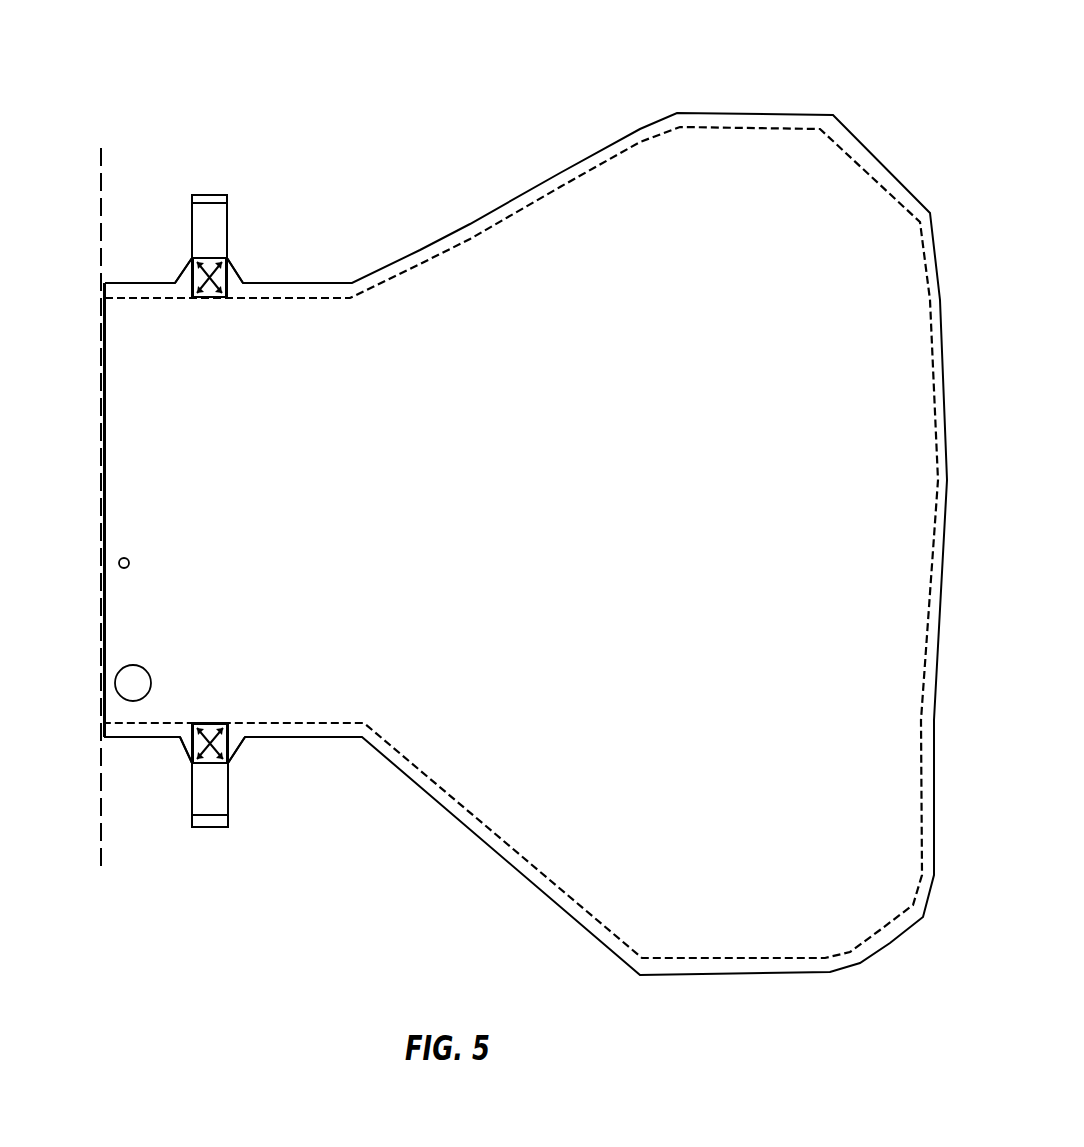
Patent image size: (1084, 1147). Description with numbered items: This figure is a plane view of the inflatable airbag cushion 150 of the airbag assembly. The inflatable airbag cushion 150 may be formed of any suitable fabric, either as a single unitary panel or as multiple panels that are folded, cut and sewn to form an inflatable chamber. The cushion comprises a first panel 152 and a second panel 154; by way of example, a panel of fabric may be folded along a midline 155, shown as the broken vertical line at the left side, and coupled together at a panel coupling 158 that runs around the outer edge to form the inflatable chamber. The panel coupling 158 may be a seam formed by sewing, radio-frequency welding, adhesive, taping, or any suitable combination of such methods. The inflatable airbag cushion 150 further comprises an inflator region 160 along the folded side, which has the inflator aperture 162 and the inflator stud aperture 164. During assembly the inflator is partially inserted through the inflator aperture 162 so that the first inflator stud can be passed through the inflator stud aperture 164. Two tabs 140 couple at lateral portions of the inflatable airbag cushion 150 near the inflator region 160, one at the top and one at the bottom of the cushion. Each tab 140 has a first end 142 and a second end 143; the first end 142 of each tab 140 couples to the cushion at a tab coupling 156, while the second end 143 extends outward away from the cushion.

The inflatable airbag cushion 150 is at (185, 94).
The first panel 152 is at (537, 277).
The second panel 154 is at (572, 247).
The midline 155 is at (101, 176).
The tab coupling 156 is at (180, 281).
The panel coupling 158 is at (587, 160).
The tab 140 is at (228, 232).
The first end 142 is at (217, 276).
The second end 143 is at (214, 195).
The inflator region 160 is at (82, 518).
The inflator aperture 162 is at (131, 683).
The inflator stud aperture 164 is at (119, 563).